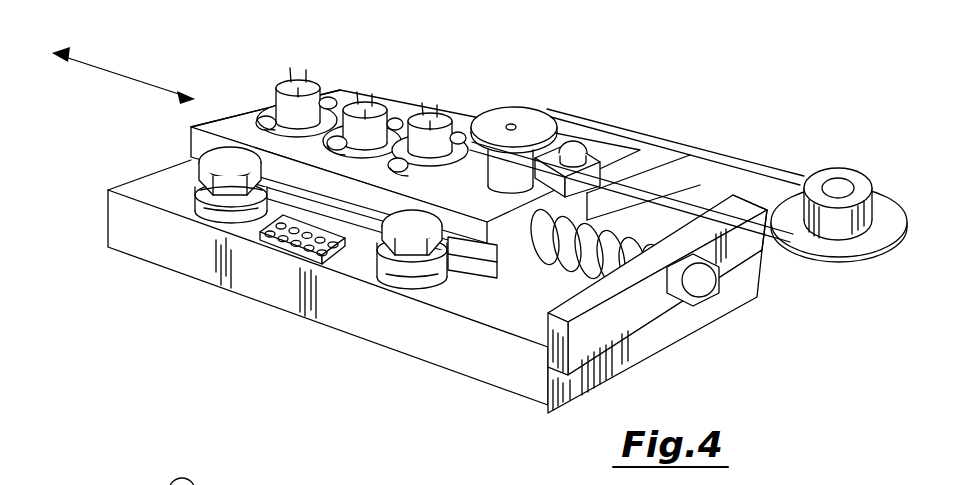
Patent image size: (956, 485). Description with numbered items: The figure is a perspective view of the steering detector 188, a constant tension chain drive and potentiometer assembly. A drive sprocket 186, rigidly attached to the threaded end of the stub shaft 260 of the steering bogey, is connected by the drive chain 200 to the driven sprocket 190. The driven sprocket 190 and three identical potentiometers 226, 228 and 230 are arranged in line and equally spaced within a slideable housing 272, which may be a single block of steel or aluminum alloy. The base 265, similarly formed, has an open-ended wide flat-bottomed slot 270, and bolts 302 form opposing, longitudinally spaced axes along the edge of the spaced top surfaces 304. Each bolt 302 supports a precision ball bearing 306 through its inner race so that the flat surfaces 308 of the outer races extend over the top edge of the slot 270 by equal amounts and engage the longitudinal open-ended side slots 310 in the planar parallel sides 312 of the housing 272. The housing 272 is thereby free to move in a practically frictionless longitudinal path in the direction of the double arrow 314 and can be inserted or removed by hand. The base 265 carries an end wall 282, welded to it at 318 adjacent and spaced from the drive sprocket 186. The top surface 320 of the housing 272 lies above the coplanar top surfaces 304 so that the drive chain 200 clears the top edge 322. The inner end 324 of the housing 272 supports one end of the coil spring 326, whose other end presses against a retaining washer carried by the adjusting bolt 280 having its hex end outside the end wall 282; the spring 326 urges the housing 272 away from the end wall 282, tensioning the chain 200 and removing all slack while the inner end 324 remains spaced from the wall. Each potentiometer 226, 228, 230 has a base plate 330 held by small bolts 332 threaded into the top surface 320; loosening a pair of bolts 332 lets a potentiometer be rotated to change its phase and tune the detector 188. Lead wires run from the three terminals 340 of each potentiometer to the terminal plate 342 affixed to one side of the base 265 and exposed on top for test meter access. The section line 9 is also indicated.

The section line 9 is at (731, 290).
The drive sprocket 186 is at (850, 178).
The steering detector 188 is at (229, 300).
The driven sprocket 190 is at (548, 98).
The drive chain 200 is at (775, 162).
The potentiometer 226 is at (432, 104).
The potentiometer 228 is at (357, 100).
The potentiometer 230 is at (293, 68).
The stub shaft 260 is at (512, 124).
The base 265 is at (112, 208).
The slot 270 is at (190, 163).
The slideable housing 272 is at (213, 113).
The adjusting bolt 280 is at (721, 292).
The end wall 282 is at (655, 302).
The bolts 302 is at (214, 160).
The top surfaces 304 is at (162, 198).
The ball bearing 306 is at (577, 160).
The flat surfaces 308 is at (205, 203).
The side slots 310 is at (590, 208).
The sides 312 is at (460, 268).
The double arrow 314 is at (124, 74).
The weld 318 is at (545, 337).
The top surface 320 is at (415, 155).
The top edge 322 is at (743, 204).
The inner end 324 is at (592, 173).
The coil spring 326 is at (588, 272).
The base plate 330 is at (272, 114).
The small bolts 332 is at (342, 128).
The terminals 340 is at (286, 70).
The terminal plate 342 is at (307, 243).